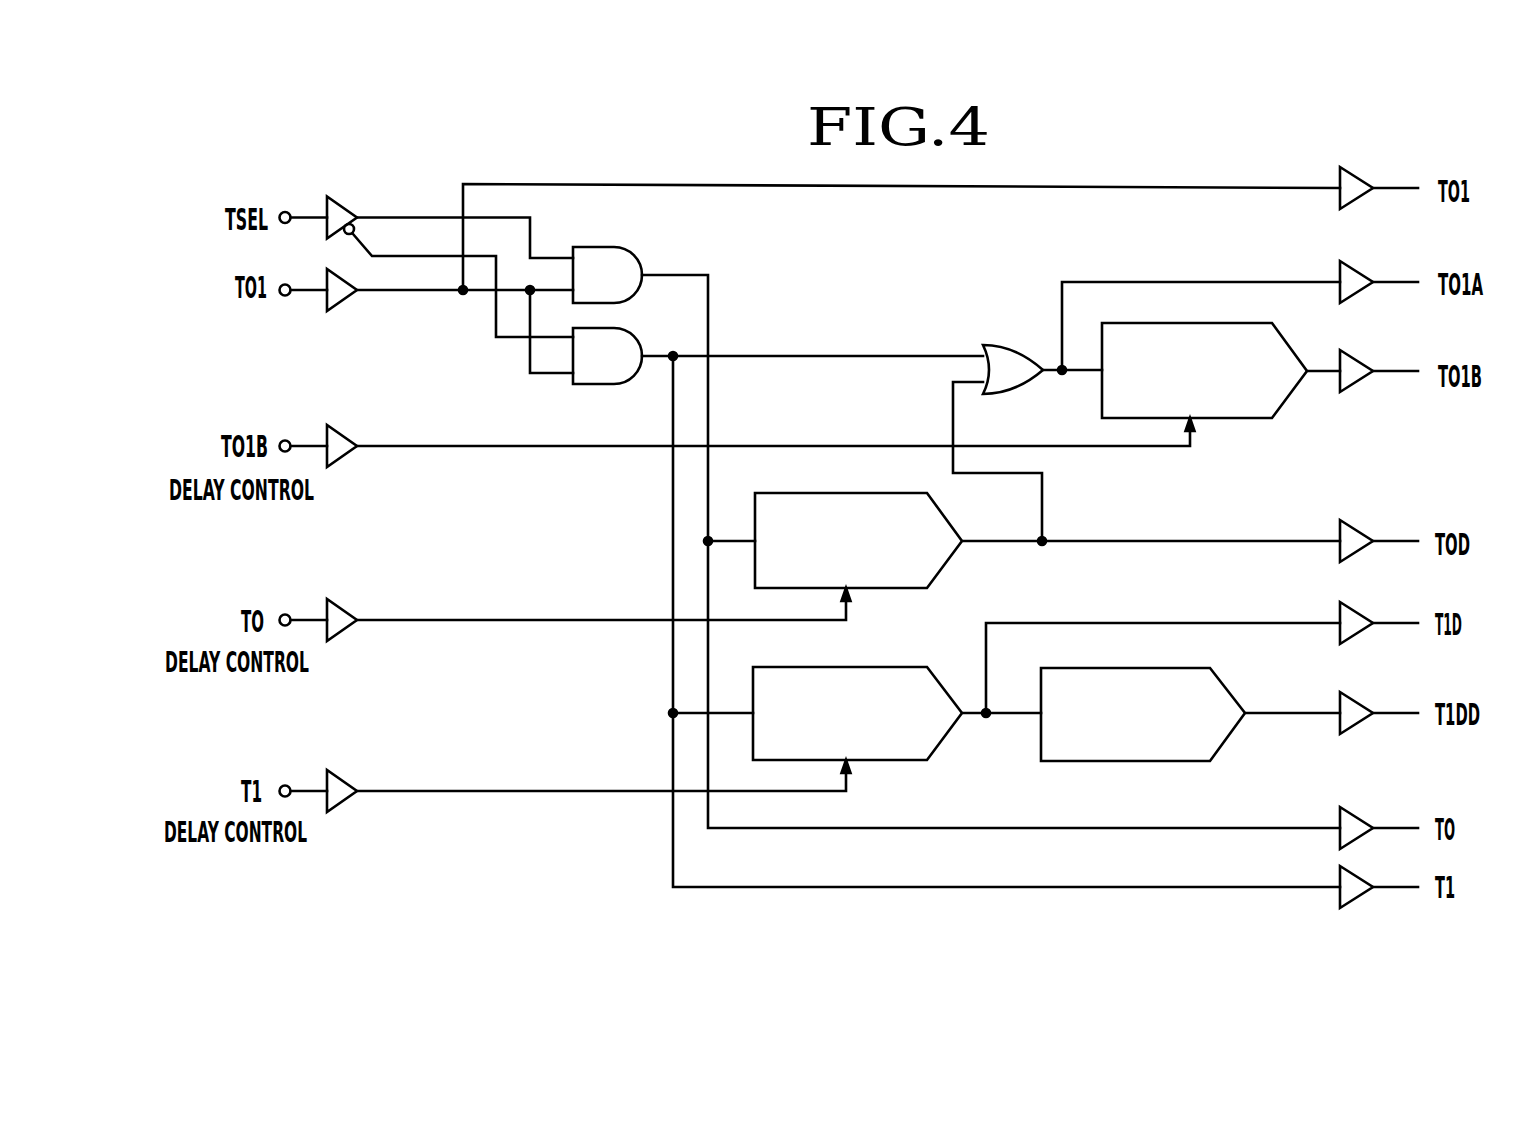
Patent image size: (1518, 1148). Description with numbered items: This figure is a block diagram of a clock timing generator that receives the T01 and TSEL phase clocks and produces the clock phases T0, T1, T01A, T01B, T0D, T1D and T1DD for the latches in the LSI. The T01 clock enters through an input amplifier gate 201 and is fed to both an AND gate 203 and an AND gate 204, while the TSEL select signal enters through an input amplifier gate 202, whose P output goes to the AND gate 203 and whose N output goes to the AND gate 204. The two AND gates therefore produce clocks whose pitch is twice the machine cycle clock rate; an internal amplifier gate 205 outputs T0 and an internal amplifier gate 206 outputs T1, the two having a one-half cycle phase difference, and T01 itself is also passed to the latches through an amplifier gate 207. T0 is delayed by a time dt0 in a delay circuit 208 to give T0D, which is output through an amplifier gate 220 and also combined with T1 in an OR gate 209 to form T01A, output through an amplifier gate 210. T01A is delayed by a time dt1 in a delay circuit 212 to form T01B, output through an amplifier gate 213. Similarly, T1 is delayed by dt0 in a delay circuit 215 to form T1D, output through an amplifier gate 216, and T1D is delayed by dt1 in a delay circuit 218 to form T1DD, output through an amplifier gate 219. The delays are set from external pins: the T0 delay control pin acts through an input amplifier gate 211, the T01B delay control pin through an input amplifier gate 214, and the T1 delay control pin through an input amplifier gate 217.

The input amplifier gate 201 is at (352, 300).
The input amplifier gate 202 is at (347, 202).
The AND gate 203 is at (638, 247).
The AND gate 204 is at (640, 373).
The internal amplifier gate 205 is at (1366, 820).
The internal amplifier gate 206 is at (1363, 881).
The amplifier gate 207 is at (1373, 196).
The delay circuit 208 is at (953, 557).
The OR gate 209 is at (995, 343).
The amplifier gate 210 is at (1373, 290).
The input amplifier gate 211 is at (352, 630).
The delay circuit 212 is at (1253, 420).
The amplifier gate 213 is at (1373, 379).
The input amplifier gate 214 is at (352, 456).
The delay circuit 215 is at (953, 730).
The amplifier gate 216 is at (1366, 615).
The input amplifier gate 217 is at (352, 801).
The delay circuit 218 is at (1227, 737).
The amplifier gate 219 is at (1366, 705).
The amplifier gate 220 is at (1366, 533).